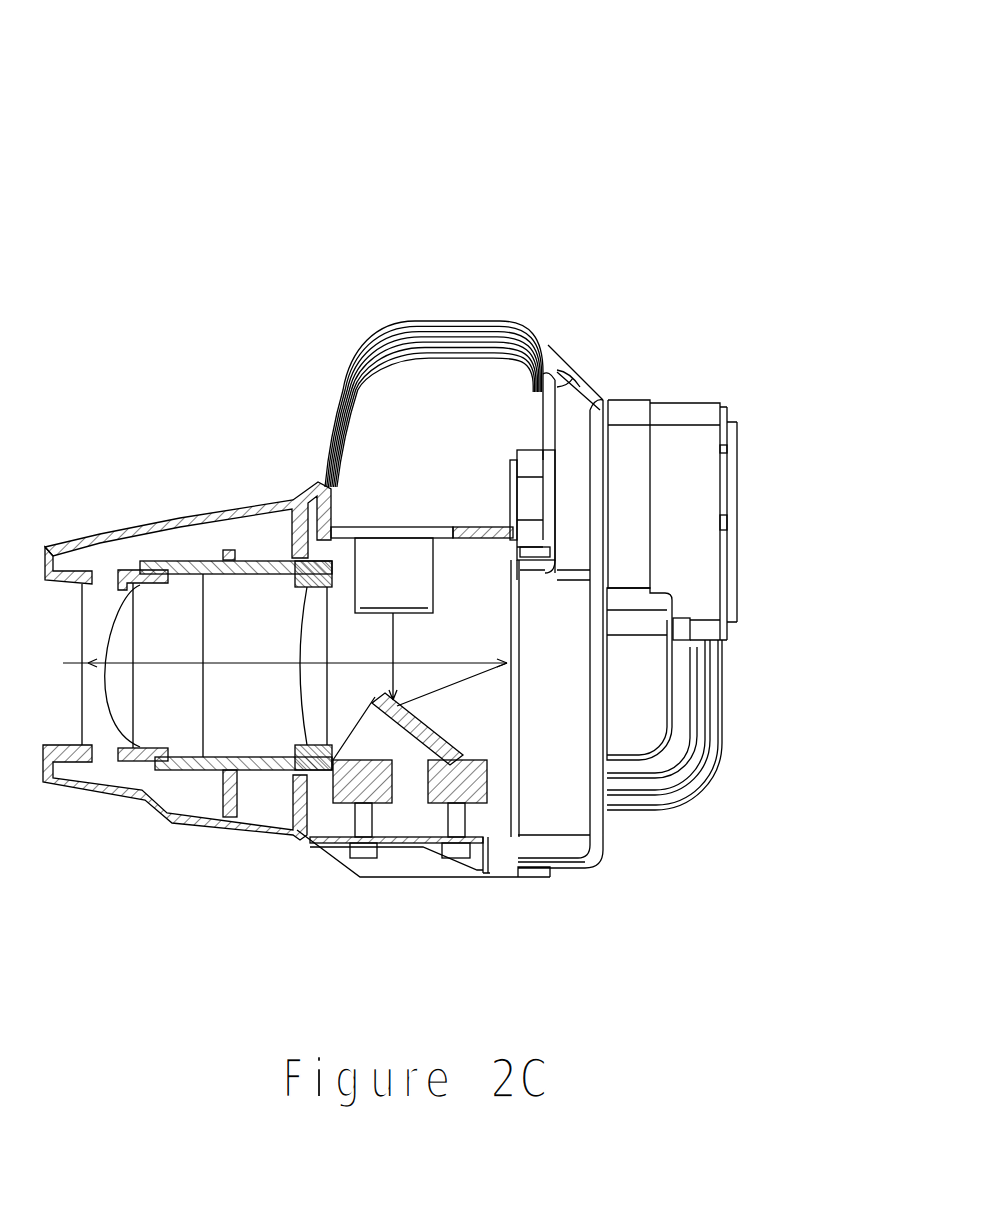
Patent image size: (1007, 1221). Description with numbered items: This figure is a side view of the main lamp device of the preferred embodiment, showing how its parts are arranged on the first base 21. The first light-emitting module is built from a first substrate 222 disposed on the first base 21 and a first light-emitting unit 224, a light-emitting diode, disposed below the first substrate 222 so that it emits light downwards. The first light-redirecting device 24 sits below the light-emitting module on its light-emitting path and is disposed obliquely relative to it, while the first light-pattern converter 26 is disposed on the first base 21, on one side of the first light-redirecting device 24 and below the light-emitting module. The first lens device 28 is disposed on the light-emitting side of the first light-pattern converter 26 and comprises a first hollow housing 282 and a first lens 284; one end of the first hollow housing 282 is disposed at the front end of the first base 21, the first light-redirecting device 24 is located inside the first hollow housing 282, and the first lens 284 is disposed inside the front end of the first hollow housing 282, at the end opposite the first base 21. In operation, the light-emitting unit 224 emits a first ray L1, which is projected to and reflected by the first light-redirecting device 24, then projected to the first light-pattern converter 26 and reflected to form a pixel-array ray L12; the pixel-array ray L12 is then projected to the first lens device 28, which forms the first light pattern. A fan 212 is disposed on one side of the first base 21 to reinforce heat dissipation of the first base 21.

The first base 21 is at (600, 825).
The fan 212 is at (715, 570).
The first substrate 222 is at (523, 321).
The first light-emitting unit 224 is at (433, 530).
The first light-redirecting device 24 is at (447, 742).
The first light-pattern converter 26 is at (515, 652).
The first lens device 28 is at (245, 863).
The first hollow housing 282 is at (238, 500).
The first lens 284 is at (143, 570).
The first ray L1 is at (397, 642).
The pixel-array ray L12 is at (372, 663).